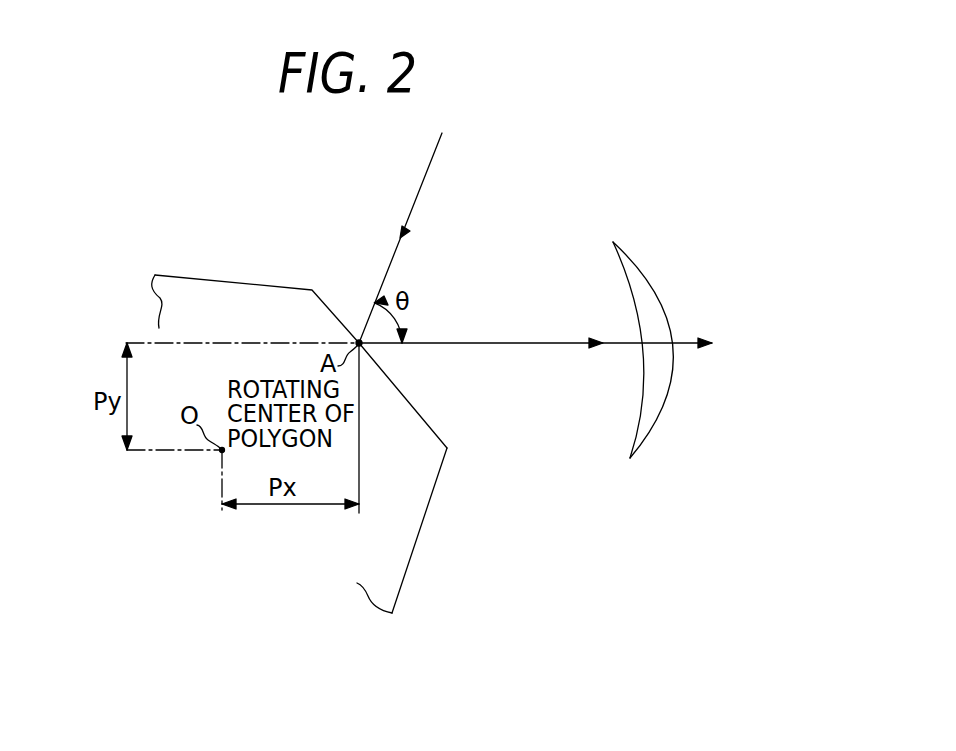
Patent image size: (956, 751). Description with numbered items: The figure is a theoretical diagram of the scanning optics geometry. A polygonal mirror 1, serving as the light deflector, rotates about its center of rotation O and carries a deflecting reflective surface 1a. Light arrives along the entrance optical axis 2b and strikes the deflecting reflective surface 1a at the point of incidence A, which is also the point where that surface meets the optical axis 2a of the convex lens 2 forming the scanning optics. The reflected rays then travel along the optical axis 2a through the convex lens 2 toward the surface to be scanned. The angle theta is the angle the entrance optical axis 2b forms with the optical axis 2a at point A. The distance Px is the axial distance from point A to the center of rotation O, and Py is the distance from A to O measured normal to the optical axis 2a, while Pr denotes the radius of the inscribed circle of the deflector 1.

The polygonal mirror 1 is at (436, 517).
The deflecting reflective surface 1a is at (415, 410).
The convex lens 2 is at (650, 280).
The optical axis 2a is at (515, 343).
The entrance optical axis 2b is at (384, 279).